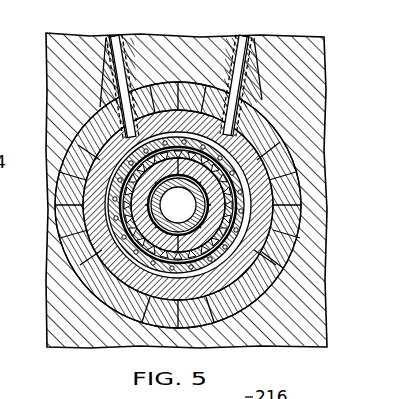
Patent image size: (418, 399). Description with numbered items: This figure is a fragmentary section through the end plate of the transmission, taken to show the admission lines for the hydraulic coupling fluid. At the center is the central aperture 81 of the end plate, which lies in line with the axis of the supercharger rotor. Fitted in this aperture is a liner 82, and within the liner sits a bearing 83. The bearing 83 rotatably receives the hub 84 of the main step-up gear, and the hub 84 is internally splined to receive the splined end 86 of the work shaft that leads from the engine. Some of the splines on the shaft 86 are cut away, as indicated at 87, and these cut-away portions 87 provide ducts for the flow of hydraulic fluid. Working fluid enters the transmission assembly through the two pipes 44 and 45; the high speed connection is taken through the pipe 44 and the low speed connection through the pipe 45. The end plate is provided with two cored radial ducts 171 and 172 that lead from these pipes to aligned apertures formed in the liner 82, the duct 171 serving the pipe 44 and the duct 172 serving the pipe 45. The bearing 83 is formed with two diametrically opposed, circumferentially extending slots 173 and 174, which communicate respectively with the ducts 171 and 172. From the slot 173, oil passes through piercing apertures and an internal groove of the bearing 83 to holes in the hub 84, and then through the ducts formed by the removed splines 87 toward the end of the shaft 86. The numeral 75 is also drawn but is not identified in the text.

The cored radial duct 171 is at (115, 36).
The cored radial duct 172 is at (253, 36).
The pipe 44 is at (120, 33).
The pipe 45 is at (242, 33).
The circumferentially extending slot 173 is at (105, 191).
The ring 75 is at (107, 230).
The cut-away splines 87 is at (220, 257).
The central aperture 81 is at (250, 147).
The liner 82 is at (257, 165).
The bearing 83 is at (245, 192).
The hub 84 is at (250, 207).
The splined end of work shaft 86 is at (255, 232).
The circumferentially extending slot 174 is at (200, 280).